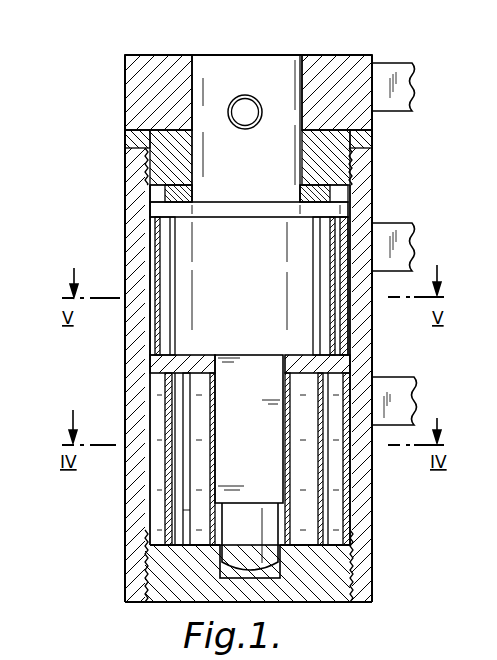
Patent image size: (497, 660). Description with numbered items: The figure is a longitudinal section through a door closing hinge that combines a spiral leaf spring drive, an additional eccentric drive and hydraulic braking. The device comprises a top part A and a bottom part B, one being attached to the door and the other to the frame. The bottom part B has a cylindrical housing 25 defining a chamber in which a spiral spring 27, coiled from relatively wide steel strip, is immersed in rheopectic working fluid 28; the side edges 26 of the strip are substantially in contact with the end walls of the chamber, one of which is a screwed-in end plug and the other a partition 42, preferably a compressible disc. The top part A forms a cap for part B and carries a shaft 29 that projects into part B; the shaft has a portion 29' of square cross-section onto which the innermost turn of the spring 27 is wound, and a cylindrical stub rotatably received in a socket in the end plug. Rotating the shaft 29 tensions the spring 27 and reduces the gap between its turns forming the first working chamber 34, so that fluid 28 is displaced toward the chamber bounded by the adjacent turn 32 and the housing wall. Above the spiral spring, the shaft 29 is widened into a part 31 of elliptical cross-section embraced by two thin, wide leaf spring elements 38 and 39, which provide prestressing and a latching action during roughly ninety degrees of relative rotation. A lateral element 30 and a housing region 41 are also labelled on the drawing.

The top part A is at (366, 58).
The bottom part B is at (370, 578).
The cylindrical housing 25 is at (134, 561).
The side edges 26 is at (350, 395).
The spiral spring 27 is at (160, 390).
The rheopectic working fluid 28 is at (155, 472).
The shaft 29 is at (250, 527).
The portion of square cross-section 29' is at (249, 429).
The inner tube 30 is at (348, 490).
The widened part of elliptical cross-section 31 is at (249, 278).
The adjacent turn 32 is at (160, 436).
The first working chamber 34 is at (160, 522).
The leaf spring element 38 is at (347, 225).
The leaf spring element 39 is at (333, 317).
The gland 41 is at (150, 282).
The partition 42 is at (350, 372).